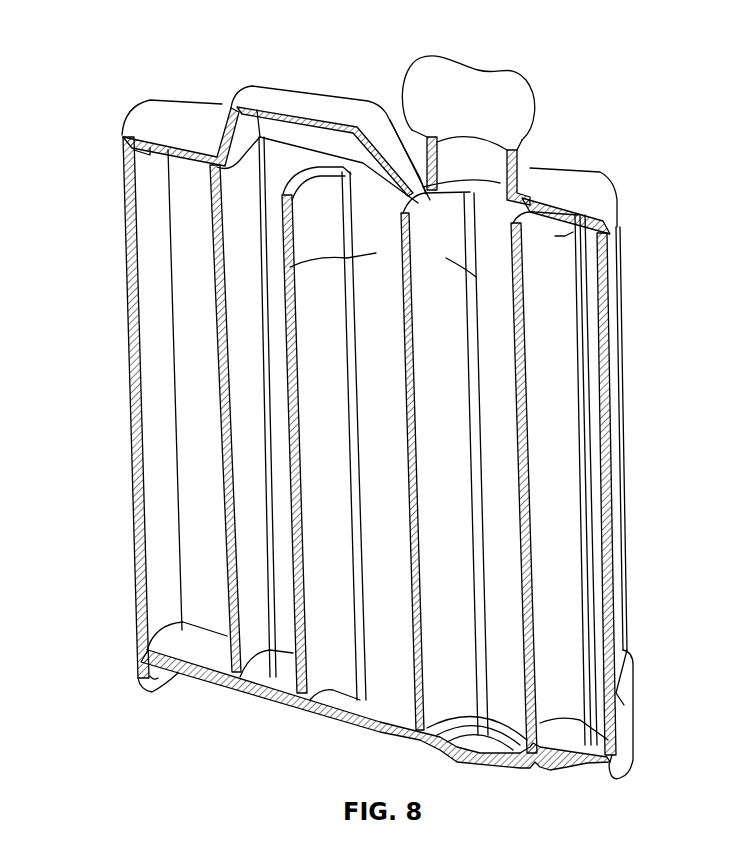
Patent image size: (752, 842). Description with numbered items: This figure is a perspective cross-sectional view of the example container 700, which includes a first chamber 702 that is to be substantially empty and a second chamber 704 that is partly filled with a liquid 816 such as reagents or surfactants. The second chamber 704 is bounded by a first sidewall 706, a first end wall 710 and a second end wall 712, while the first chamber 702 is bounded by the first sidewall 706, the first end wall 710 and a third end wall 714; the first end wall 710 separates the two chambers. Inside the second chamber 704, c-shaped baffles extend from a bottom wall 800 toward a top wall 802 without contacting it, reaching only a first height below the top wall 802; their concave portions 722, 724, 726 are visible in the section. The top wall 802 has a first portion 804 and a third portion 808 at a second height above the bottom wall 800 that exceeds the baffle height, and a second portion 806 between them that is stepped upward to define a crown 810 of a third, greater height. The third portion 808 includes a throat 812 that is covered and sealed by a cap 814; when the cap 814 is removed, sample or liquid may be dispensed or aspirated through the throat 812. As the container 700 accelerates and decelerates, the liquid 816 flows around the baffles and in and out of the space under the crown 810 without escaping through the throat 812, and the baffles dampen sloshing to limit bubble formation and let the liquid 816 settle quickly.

The container 700 is at (614, 66).
The first chamber 702 is at (150, 190).
The second chamber 704 is at (574, 246).
The first sidewall 706 is at (180, 198).
The first end wall 710 is at (232, 680).
The second end wall 712 is at (612, 430).
The third end wall 714 is at (134, 447).
The concave portion 722 is at (313, 205).
The concave portion 724 is at (470, 275).
The concave portion 726 is at (556, 258).
The bottom wall 800 is at (358, 730).
The top wall 802 is at (148, 125).
The first portion 804 is at (200, 112).
The second portion 806 is at (305, 97).
The third portion 808 is at (580, 183).
The crown 810 is at (336, 105).
The throat 812 is at (478, 160).
The cap 814 is at (496, 85).
The liquid 816 is at (402, 376).